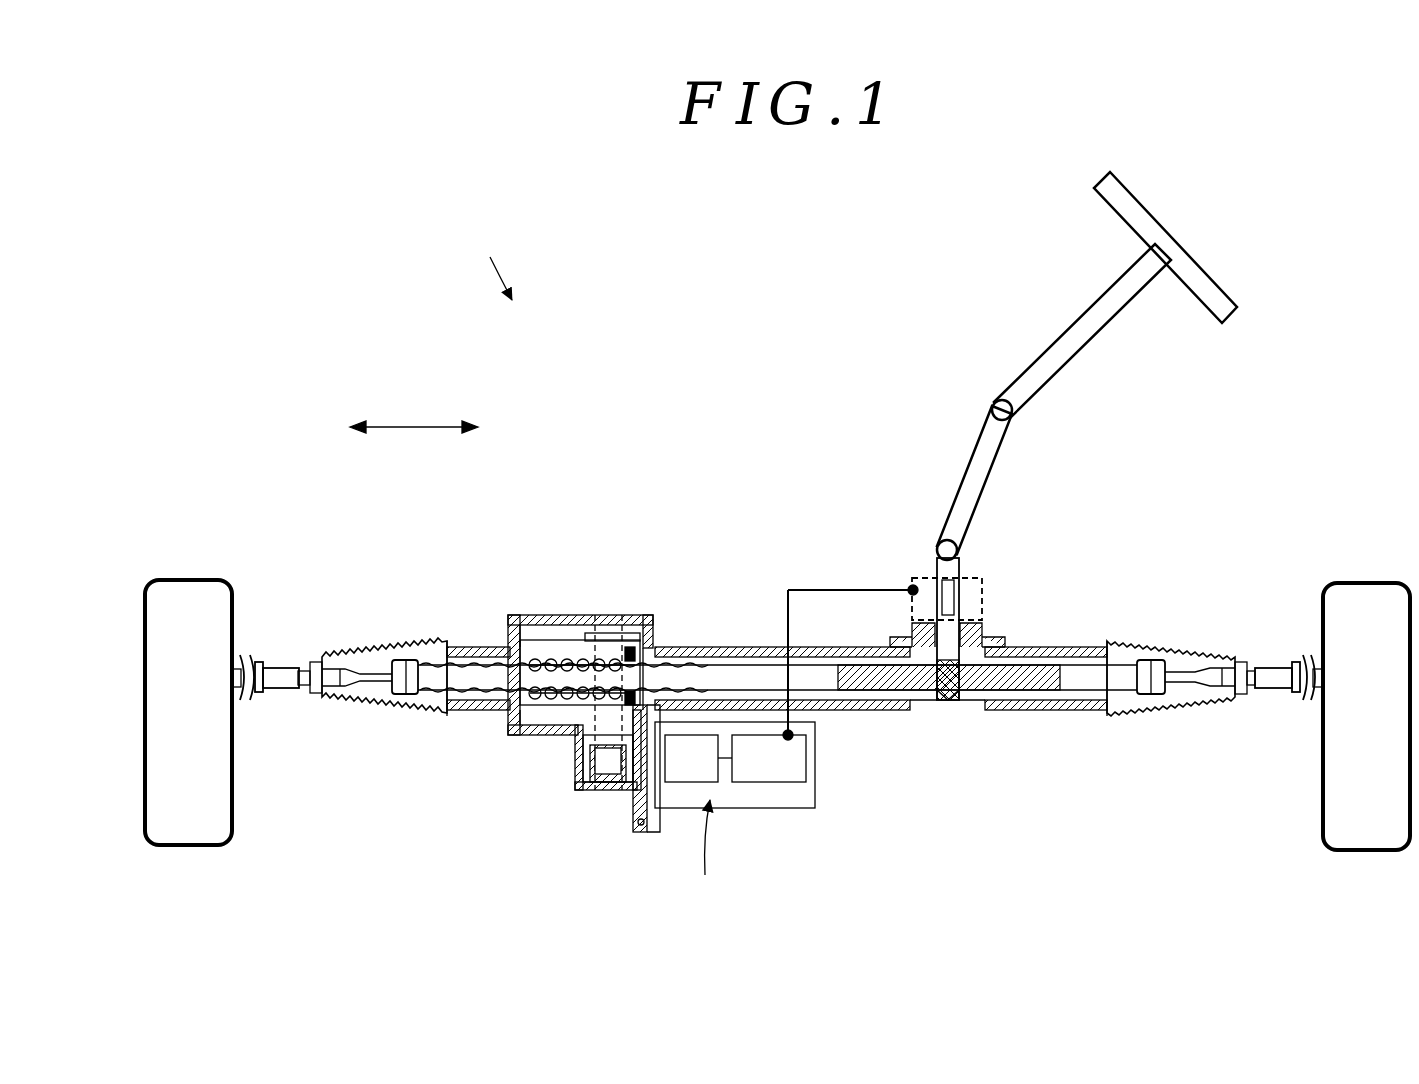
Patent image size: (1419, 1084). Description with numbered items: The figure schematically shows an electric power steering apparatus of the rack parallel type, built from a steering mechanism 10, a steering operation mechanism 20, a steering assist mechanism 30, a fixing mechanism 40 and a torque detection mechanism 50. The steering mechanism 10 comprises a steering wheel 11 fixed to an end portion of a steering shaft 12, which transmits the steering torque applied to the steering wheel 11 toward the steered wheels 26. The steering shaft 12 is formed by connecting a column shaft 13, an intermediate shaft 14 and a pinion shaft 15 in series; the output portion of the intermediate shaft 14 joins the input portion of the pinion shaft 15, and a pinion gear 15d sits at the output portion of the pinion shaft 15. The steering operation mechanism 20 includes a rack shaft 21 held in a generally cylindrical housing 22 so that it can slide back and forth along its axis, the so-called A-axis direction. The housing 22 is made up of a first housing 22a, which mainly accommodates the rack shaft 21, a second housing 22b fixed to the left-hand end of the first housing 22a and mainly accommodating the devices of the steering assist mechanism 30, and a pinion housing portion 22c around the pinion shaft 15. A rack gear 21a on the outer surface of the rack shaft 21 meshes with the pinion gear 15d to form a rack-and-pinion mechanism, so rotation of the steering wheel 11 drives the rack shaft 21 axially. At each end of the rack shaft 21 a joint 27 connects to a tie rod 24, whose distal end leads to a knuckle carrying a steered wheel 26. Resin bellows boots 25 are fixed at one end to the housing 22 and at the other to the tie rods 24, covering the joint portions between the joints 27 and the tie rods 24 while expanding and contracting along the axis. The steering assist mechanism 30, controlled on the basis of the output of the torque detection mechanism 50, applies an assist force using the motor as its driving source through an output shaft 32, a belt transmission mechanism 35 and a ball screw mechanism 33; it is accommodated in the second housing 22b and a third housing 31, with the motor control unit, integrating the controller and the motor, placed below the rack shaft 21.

The steering mechanism 10 is at (957, 333).
The steering wheel 11 is at (1139, 210).
The steering shaft 12 is at (1173, 350).
The column shaft 13 is at (1044, 371).
The intermediate shaft 14 is at (989, 440).
The pinion shaft 15 is at (953, 558).
The pinion gear 15d is at (948, 700).
The steering operation mechanism 20 is at (660, 470).
The rack shaft 21 is at (768, 680).
The rack gear 21a is at (880, 690).
The housing 22 is at (635, 562).
The first housing 22a is at (718, 645).
The second housing 22b is at (570, 615).
The pinion housing 22c is at (912, 640).
The tie rod 24 is at (275, 690).
The boot 25 is at (388, 650).
The steered wheel 26 is at (170, 603).
The joint 27 is at (403, 690).
The steering assist mechanism 30 is at (565, 782).
The third housing 31 is at (795, 805).
The output shaft 32 is at (637, 762).
The ball screw mechanism 33 is at (648, 642).
The belt transmission mechanism 35 is at (572, 733).
The fixing mechanism 40 is at (638, 720).
The torque detection mechanism 50 is at (910, 587).